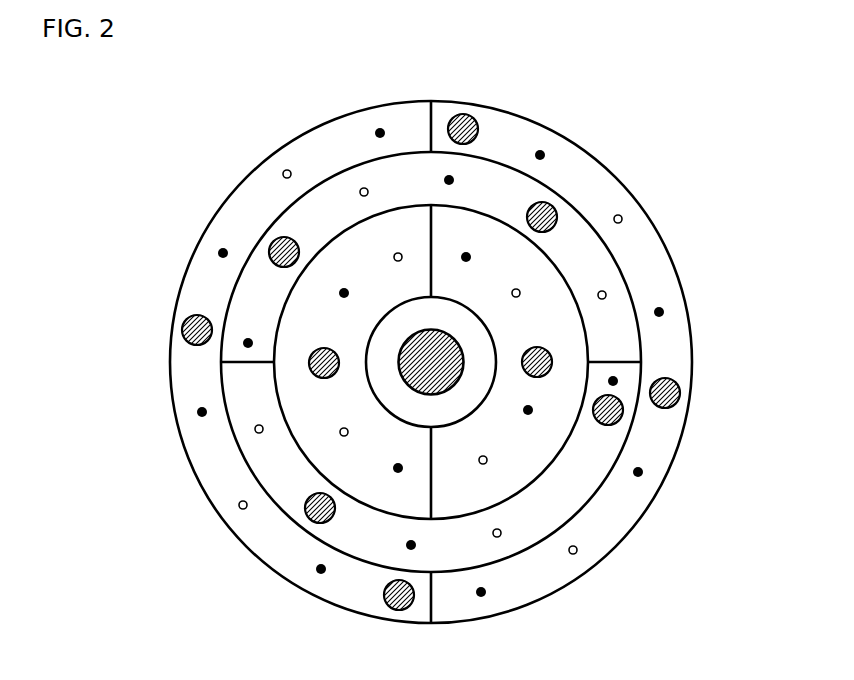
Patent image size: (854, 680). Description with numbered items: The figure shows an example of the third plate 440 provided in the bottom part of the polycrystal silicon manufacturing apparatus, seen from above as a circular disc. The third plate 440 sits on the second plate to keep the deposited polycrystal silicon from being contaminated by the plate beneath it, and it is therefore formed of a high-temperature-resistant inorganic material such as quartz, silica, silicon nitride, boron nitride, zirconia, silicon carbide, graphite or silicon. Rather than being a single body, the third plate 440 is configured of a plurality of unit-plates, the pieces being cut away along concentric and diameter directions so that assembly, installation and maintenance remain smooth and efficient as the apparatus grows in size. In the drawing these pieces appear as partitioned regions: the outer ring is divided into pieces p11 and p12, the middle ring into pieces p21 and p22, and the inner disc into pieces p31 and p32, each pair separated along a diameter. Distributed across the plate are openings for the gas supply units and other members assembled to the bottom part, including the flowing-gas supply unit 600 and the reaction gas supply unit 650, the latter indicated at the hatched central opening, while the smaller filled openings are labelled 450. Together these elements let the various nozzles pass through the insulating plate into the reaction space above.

The third plate 440 is at (108, 140).
The first holes 450 is at (662, 312).
The flowing-gas supply unit 600 is at (620, 214).
The reaction gas supply unit 650 is at (443, 330).
The outer ring first partition p11 is at (190, 442).
The outer ring second partition p12 is at (447, 602).
The middle ring first partition p21 is at (252, 275).
The middle ring second partition p22 is at (227, 380).
The inner disk first partition p31 is at (352, 245).
The inner disk second partition p32 is at (440, 223).